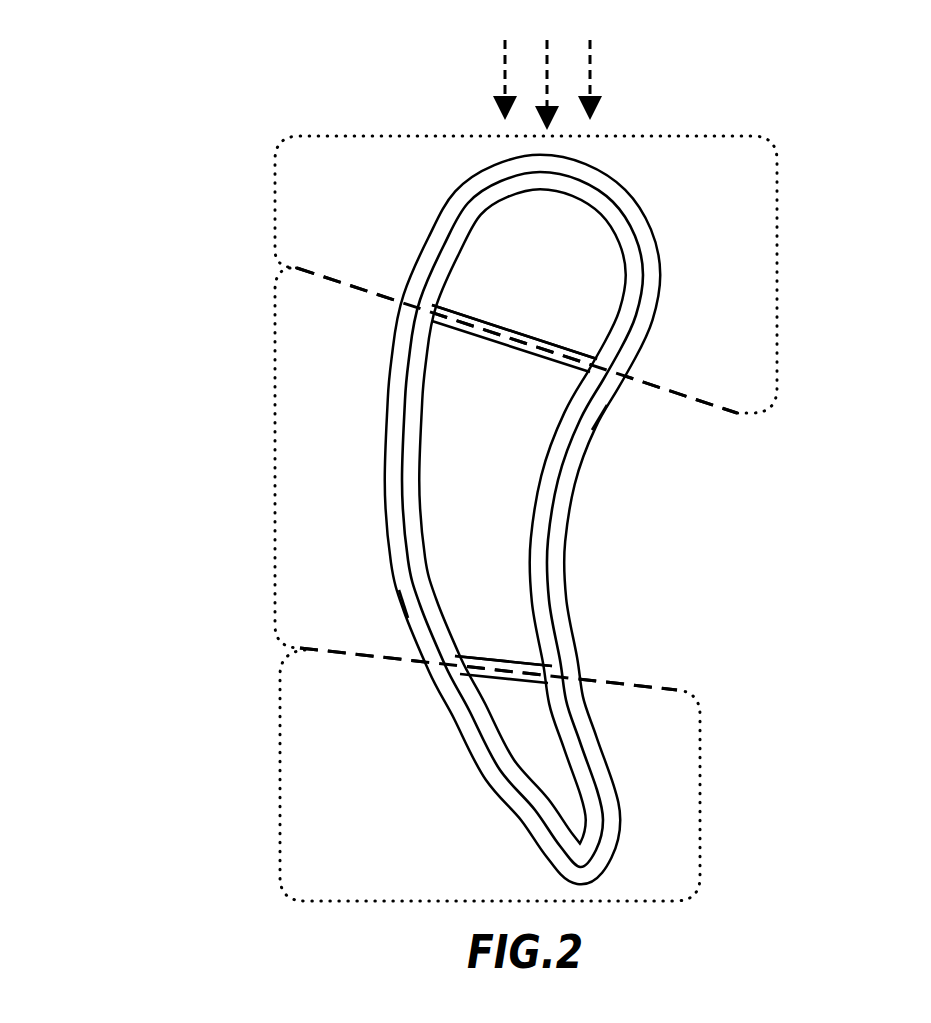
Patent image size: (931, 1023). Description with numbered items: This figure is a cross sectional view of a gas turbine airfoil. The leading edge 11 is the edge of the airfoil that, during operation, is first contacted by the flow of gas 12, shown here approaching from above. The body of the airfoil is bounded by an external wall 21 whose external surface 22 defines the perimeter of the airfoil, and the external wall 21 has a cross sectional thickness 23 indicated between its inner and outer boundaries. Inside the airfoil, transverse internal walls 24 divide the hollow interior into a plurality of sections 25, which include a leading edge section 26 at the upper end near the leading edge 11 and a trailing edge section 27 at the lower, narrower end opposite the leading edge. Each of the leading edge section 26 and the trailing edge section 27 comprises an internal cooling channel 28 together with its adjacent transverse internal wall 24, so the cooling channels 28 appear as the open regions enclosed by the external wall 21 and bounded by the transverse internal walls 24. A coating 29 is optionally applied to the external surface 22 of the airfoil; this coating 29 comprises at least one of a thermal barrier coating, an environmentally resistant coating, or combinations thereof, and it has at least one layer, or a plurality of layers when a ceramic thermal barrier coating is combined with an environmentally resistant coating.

The leading edge 11 is at (492, 181).
The flow of gas 12 is at (547, 77).
The external wall 21 is at (419, 331).
The external surface 22 is at (403, 605).
The cross sectional thickness 23 is at (485, 395).
The transverse internal wall 24 is at (504, 344).
The sections 25 is at (461, 518).
The leading edge section 26 is at (779, 251).
The trailing edge section 27 is at (704, 790).
The internal cooling channel 28 is at (572, 264).
The coating 29 is at (599, 419).